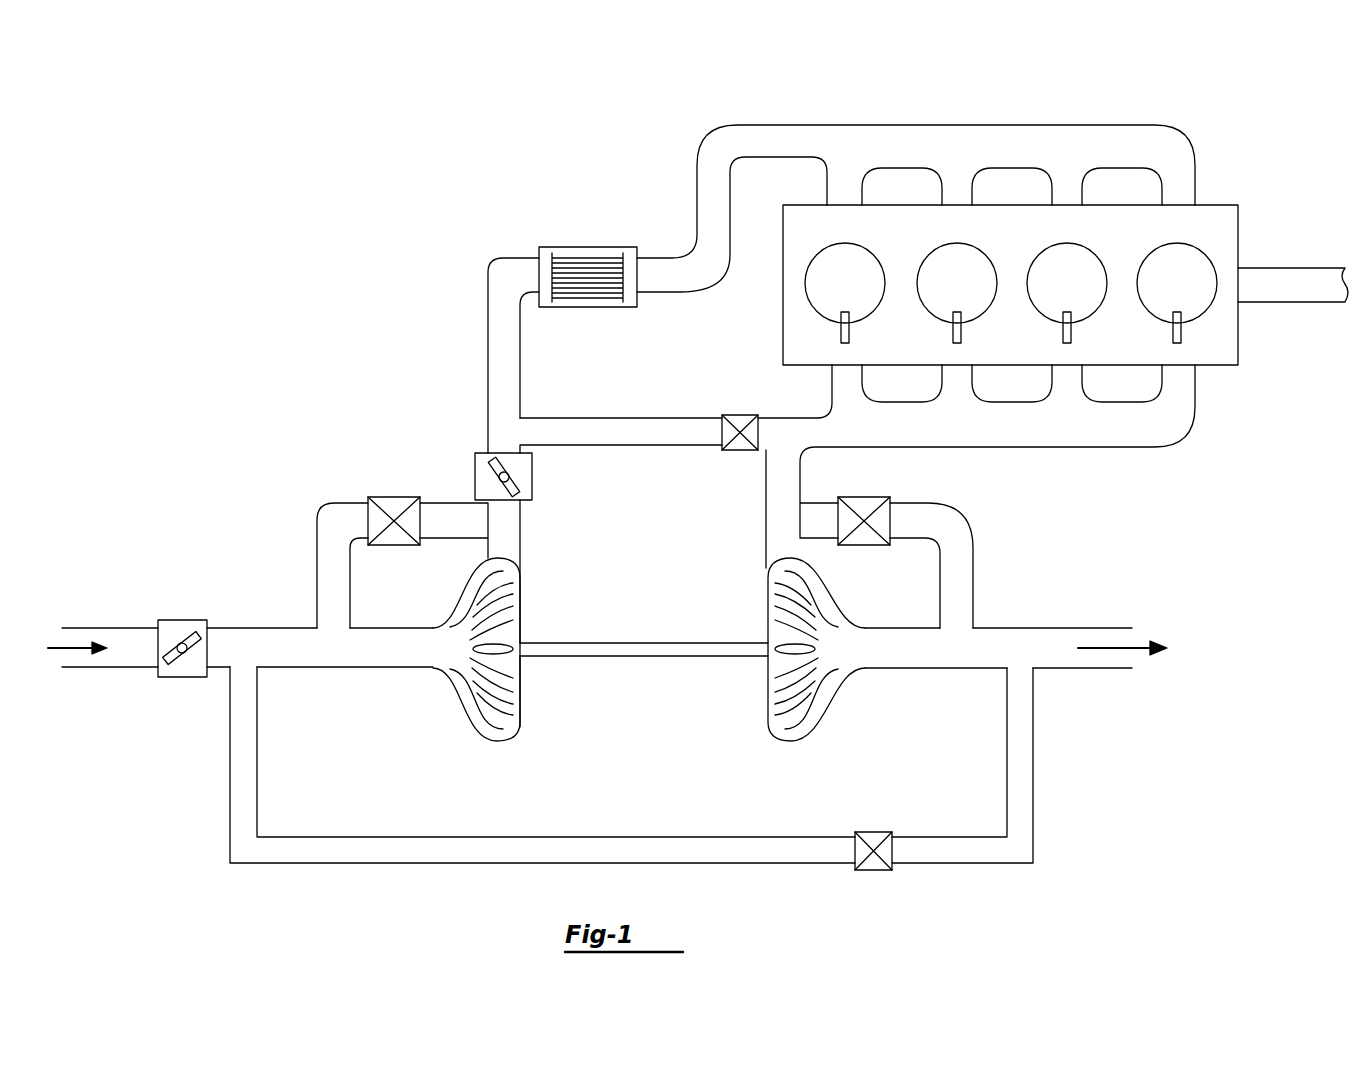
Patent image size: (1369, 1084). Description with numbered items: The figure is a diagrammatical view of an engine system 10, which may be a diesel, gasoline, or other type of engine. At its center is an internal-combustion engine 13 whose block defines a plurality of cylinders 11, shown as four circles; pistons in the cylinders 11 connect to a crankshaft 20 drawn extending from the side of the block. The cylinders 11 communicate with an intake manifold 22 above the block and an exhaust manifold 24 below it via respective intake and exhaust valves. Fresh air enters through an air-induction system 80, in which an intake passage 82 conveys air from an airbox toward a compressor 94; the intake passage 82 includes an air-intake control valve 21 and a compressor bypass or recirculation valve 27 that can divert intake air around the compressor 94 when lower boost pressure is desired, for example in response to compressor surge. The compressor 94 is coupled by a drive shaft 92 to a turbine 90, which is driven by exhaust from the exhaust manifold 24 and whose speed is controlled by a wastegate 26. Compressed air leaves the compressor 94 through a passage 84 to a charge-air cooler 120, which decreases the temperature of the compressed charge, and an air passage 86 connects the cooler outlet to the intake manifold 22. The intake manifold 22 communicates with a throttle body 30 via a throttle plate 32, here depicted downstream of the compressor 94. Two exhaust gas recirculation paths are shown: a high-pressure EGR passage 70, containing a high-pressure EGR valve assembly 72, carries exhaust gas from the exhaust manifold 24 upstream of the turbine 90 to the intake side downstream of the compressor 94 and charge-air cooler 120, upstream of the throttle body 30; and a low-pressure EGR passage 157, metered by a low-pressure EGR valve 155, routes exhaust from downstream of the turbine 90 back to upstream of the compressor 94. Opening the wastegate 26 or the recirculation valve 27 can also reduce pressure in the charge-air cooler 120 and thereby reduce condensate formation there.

The engine system 10 is at (1106, 92).
The cylinders 11 is at (835, 299).
The internal-combustion engine 13 is at (1238, 235).
The crankshaft 20 is at (1290, 304).
The air-intake control valve 21 is at (185, 620).
The intake manifold 22 is at (838, 163).
The exhaust manifold 24 is at (1001, 436).
The wastegate 26 is at (892, 520).
The compressor bypass or recirculation valve (CRV) 27 is at (383, 497).
The throttle body 30 is at (475, 463).
The throttle plate 32 is at (530, 482).
The high-pressure EGR passage 70 is at (622, 417).
The high-pressure EGR valve assembly 72 is at (740, 414).
The air-induction system 80 is at (292, 462).
The intake passage 82 is at (118, 664).
The passage 84 is at (487, 320).
The air passage 86 is at (715, 175).
The turbine 90 is at (825, 693).
The drive shaft 92 is at (645, 642).
The compressor 94 is at (462, 697).
The charge-air cooler 120 is at (565, 247).
The low-pressure EGR valve 155 is at (872, 831).
The low-pressure EGR passage 157 is at (620, 836).